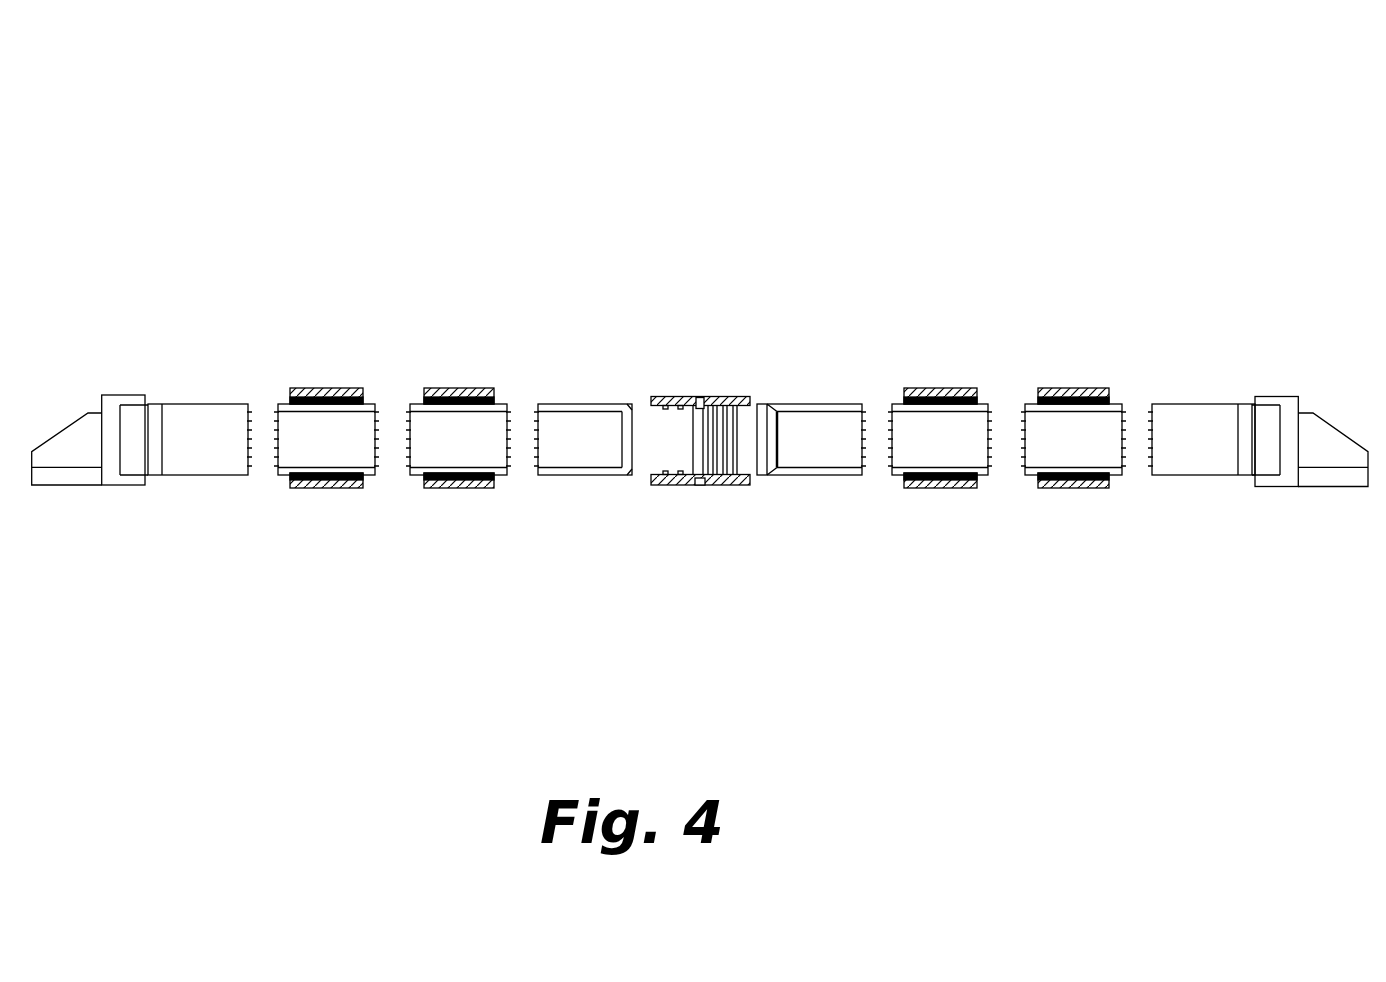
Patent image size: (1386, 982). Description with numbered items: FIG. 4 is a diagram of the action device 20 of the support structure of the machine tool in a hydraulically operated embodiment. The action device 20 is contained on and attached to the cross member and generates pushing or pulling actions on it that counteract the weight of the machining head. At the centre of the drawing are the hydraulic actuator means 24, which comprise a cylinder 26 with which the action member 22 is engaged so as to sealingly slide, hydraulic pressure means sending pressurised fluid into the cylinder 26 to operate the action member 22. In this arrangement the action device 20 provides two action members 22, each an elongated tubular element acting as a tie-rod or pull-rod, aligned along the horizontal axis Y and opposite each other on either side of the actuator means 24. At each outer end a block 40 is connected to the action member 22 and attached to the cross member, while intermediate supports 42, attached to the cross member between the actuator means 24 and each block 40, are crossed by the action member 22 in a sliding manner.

The action device 20 is at (1013, 225).
The action member 22 is at (208, 397).
The actuator means 24 is at (685, 391).
The cylinder 26 is at (723, 485).
The block 40 is at (52, 476).
The intermediate support 42 is at (330, 386).